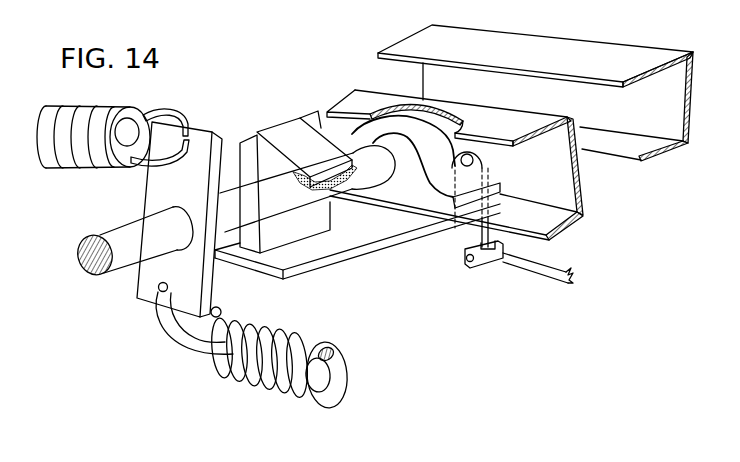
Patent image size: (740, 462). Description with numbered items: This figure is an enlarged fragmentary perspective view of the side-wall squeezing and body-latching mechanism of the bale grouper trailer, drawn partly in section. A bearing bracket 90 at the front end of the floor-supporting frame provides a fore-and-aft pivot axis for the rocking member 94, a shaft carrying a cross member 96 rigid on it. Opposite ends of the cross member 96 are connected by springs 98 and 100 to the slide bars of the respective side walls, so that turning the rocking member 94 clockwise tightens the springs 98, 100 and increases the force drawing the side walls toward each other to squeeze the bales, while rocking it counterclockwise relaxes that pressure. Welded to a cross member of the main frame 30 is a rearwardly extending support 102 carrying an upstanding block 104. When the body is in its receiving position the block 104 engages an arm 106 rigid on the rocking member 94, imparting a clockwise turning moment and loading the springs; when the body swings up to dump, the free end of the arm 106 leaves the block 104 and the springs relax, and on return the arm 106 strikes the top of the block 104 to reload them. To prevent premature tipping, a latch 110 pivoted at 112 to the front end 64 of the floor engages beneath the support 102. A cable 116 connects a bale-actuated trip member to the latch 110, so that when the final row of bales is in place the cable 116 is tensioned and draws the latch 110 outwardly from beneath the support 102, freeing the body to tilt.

The main frame 30 is at (646, 42).
The front end of the floor 64 is at (580, 200).
The bearing bracket 90 is at (357, 142).
The rocking member 94 is at (121, 262).
The cross member 96 is at (217, 134).
The spring 98 is at (297, 398).
The spring 100 is at (67, 173).
The support 102 is at (373, 244).
The block 104 is at (243, 142).
The arm 106 is at (289, 121).
The latch 110 is at (427, 229).
The pivot 112 is at (474, 160).
The cable 116 is at (563, 270).